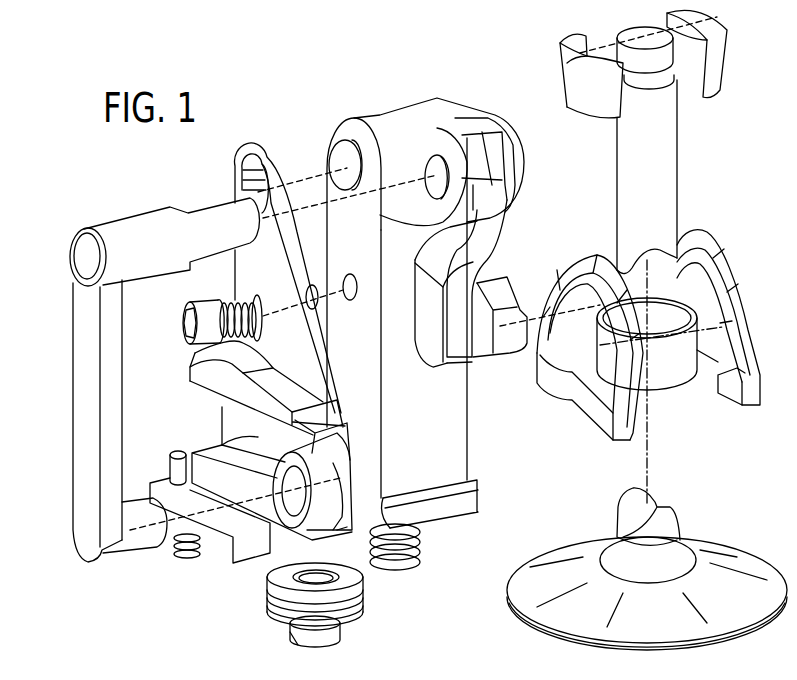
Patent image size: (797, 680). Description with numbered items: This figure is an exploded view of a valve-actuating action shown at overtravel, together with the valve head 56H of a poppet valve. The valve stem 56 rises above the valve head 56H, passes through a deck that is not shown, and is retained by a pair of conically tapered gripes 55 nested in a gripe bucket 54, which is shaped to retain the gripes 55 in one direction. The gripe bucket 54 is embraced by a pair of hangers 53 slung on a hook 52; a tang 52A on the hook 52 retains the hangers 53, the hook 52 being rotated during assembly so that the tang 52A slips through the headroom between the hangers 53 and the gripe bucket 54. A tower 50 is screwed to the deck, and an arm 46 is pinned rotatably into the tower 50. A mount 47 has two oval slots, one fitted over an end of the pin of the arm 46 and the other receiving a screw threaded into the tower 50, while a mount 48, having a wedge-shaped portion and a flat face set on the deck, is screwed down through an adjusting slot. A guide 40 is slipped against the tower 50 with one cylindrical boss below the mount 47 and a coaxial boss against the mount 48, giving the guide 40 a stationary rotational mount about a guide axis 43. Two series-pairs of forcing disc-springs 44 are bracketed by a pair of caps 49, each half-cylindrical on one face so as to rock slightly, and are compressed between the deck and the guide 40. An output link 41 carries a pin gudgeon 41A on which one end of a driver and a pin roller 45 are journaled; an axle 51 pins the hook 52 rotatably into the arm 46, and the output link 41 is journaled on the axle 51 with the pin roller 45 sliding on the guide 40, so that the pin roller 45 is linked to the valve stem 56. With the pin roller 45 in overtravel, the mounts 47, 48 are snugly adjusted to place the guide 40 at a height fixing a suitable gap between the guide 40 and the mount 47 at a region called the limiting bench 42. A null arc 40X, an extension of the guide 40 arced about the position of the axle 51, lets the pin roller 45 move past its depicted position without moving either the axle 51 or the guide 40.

The guide 40 is at (275, 462).
The null arc 40X is at (337, 530).
The output link 41 is at (95, 393).
The pin gudgeon 41A is at (132, 525).
The limiting bench 42 is at (317, 411).
The guide axis 43 is at (222, 430).
The forcing disc-springs 44 is at (360, 590).
The pin roller 45 is at (345, 504).
The arm 46 is at (421, 166).
The mount 47 is at (283, 283).
The mount 48 is at (203, 527).
The caps 49 is at (290, 632).
The tower 50 is at (440, 410).
The axle 51 is at (225, 218).
The hook 52 is at (446, 321).
The tang 52A is at (500, 290).
The hangers 53 is at (750, 383).
The gripe bucket 54 is at (680, 370).
The gripes 55 is at (717, 60).
The valve stem 56 is at (656, 201).
The valve head 56H is at (683, 624).